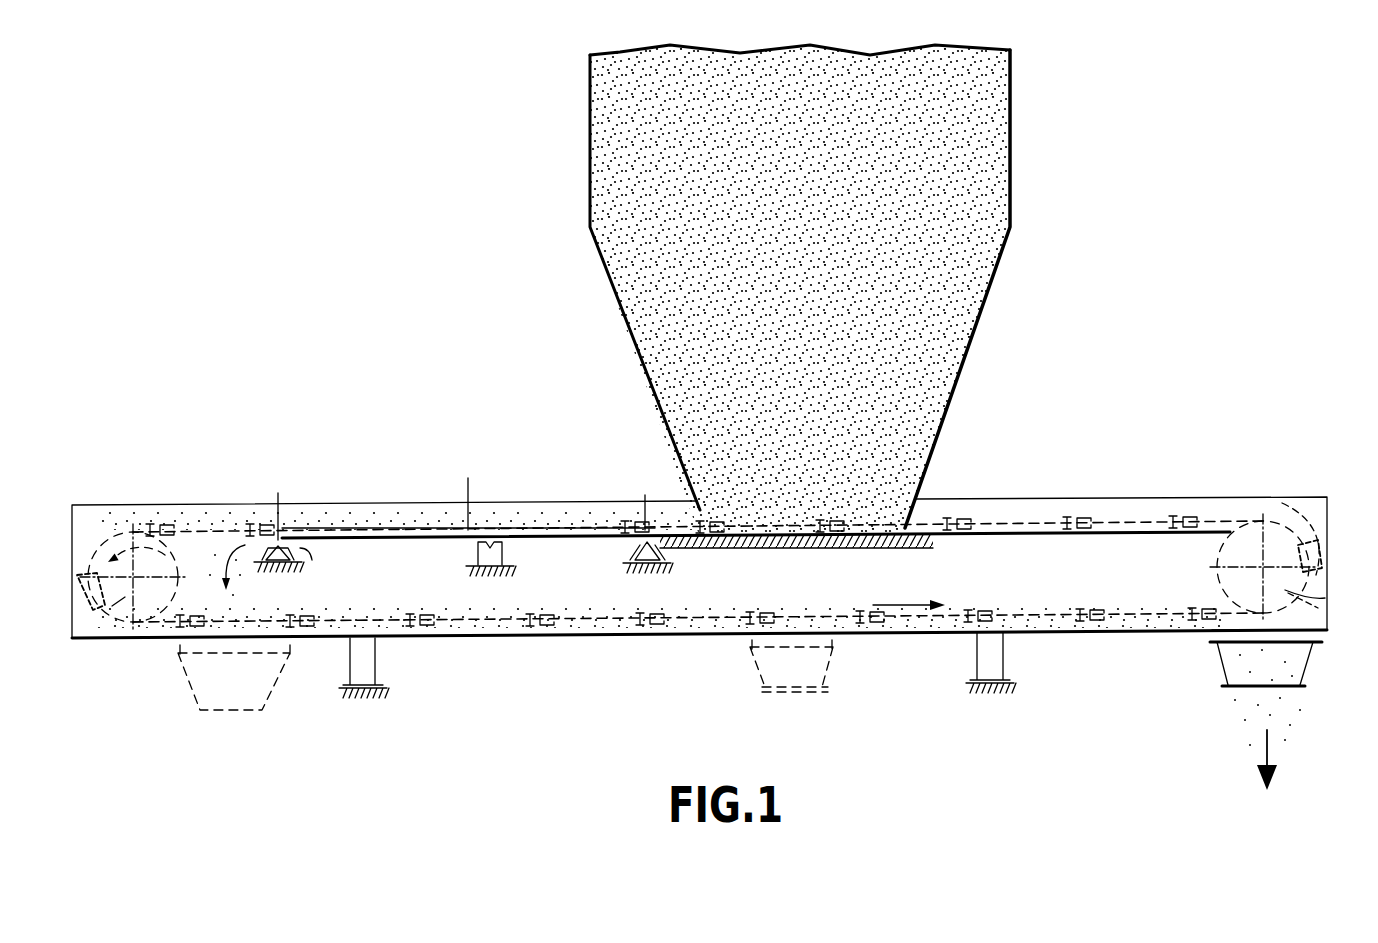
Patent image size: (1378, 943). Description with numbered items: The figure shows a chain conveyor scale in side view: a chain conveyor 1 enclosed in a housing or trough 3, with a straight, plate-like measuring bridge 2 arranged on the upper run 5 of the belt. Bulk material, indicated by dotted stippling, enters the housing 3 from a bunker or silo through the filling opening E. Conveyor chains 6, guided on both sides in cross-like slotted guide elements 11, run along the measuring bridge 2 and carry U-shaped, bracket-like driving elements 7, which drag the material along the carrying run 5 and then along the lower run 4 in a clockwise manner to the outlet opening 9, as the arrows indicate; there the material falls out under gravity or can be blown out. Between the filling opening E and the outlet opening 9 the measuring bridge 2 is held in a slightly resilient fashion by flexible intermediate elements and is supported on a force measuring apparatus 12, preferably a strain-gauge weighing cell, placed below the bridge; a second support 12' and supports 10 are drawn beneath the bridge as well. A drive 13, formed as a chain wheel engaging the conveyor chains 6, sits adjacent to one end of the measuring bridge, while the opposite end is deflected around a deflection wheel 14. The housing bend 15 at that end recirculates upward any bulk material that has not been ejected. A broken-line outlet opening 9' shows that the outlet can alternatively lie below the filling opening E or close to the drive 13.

The chain conveyor 1 is at (505, 485).
The measuring bridge 2 is at (418, 545).
The housing 3 is at (118, 512).
The lower run 4 is at (523, 640).
The upper run 5 is at (210, 522).
The conveyor chains 6 is at (152, 625).
The driving elements 7 is at (205, 640).
The outlet opening 9 is at (1240, 710).
The outlet opening 9' is at (505, 688).
The supports 10 is at (465, 540).
The guide elements 11 is at (503, 530).
The force measuring apparatus 12 is at (510, 572).
The load cell 12' is at (302, 575).
The drive 13 is at (125, 600).
The deflection wheel 14 is at (1325, 598).
The housing bend 15 is at (1309, 502).
The opening E is at (872, 498).